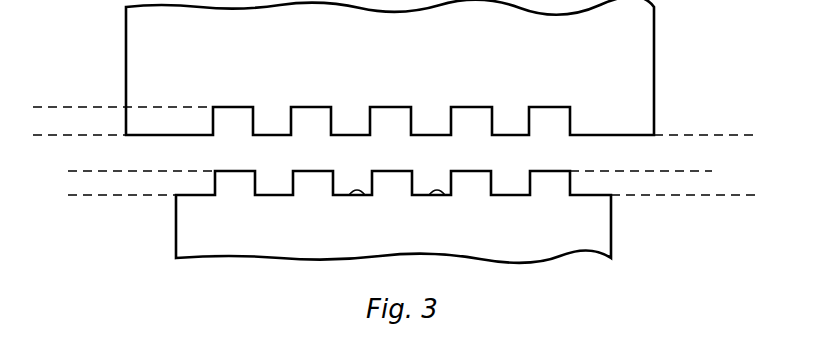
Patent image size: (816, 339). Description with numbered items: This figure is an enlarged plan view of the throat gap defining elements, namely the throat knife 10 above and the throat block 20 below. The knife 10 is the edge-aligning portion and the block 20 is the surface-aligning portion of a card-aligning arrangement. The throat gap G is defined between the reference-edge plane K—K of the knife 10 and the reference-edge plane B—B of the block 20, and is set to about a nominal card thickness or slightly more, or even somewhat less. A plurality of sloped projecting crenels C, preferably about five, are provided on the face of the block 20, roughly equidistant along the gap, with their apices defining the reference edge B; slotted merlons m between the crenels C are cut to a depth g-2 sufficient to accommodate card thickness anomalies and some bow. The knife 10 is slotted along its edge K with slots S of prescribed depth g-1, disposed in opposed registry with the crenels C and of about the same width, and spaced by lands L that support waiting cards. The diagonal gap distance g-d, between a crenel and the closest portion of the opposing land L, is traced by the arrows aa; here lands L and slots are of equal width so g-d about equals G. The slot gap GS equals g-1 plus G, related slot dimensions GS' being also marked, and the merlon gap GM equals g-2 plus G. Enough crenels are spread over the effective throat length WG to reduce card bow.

The throat knife 10 is at (428, 34).
The throat block 20 is at (412, 251).
The grating spacing (groove) GS' is at (336, 92).
The slot gap GS is at (532, 138).
The knife slots S is at (296, 108).
The diagonal gap distance g-d is at (292, 135).
The lands L is at (430, 118).
The throat gap G is at (677, 133).
The merlon gap GM is at (731, 133).
The reference-edge plane of knife K is at (390, 124).
The reference-edge plane of block B is at (731, 200).
The slot depth g-1 is at (41, 85).
The merlon depth g-2 is at (162, 171).
The arrows aa is at (253, 135).
The crenels C is at (310, 185).
The merlons m is at (436, 200).
The effective throat length WG is at (215, 135).